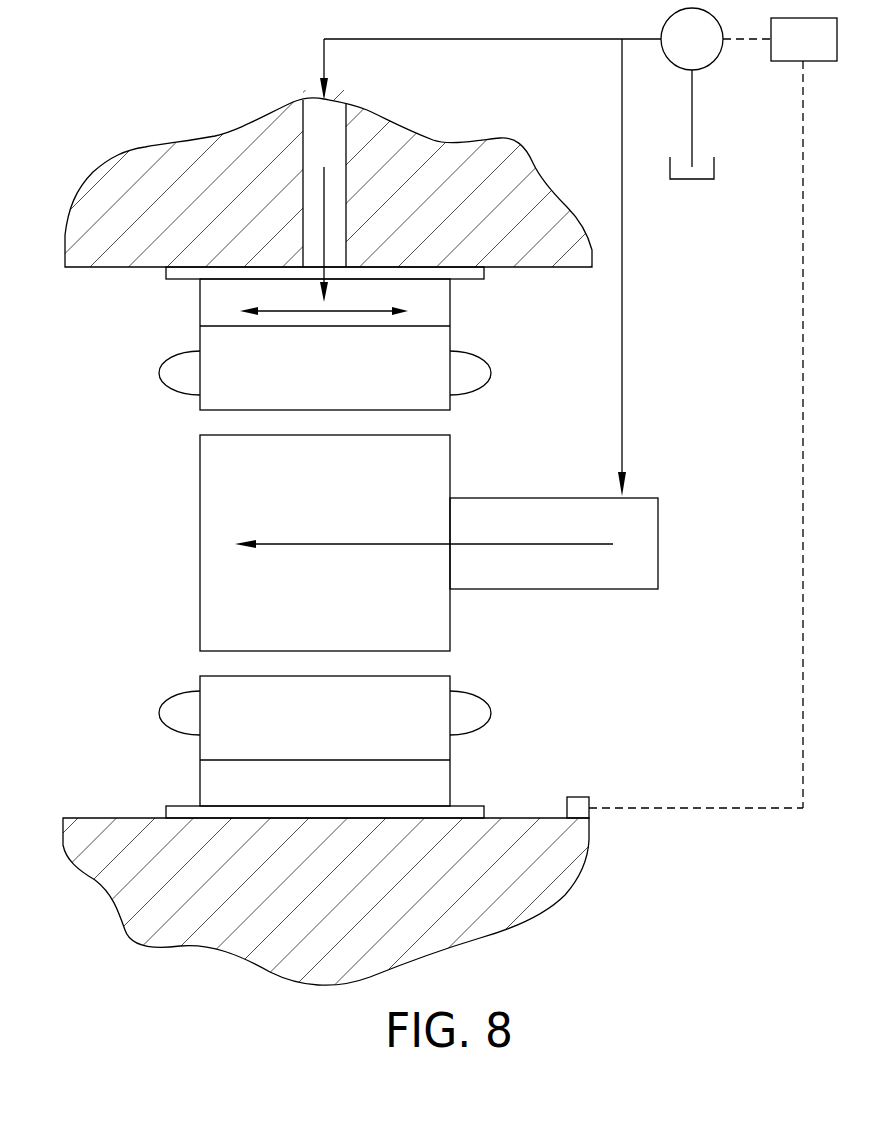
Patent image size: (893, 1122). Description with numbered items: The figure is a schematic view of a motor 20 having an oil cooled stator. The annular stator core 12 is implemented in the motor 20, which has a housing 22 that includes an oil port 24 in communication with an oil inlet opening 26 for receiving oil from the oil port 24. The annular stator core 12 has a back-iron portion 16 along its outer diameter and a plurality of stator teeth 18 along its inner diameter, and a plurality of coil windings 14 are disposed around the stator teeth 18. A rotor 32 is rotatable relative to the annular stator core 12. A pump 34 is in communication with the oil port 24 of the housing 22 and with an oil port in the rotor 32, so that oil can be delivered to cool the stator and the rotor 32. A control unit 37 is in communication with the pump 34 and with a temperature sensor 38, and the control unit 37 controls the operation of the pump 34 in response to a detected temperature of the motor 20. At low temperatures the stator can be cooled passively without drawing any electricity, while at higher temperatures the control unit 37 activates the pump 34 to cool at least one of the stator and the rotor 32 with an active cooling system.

The annular stator core 12 is at (452, 303).
The coil windings 14 is at (158, 373).
The back-iron portion 16 is at (217, 787).
The stator teeth 18 is at (420, 396).
The motor 20 is at (532, 147).
The housing 22 is at (203, 167).
The oil port 24 is at (346, 138).
The oil inlet opening 26 is at (325, 235).
The rotor 32 is at (200, 545).
The pump 34 is at (707, 51).
The control unit 37 is at (818, 50).
The temperature sensor 38 is at (578, 797).